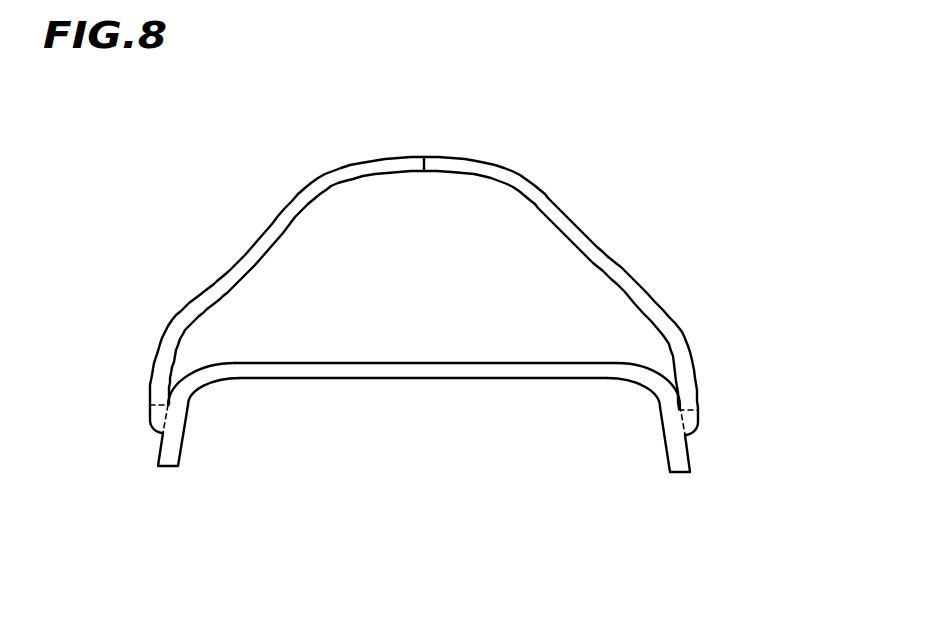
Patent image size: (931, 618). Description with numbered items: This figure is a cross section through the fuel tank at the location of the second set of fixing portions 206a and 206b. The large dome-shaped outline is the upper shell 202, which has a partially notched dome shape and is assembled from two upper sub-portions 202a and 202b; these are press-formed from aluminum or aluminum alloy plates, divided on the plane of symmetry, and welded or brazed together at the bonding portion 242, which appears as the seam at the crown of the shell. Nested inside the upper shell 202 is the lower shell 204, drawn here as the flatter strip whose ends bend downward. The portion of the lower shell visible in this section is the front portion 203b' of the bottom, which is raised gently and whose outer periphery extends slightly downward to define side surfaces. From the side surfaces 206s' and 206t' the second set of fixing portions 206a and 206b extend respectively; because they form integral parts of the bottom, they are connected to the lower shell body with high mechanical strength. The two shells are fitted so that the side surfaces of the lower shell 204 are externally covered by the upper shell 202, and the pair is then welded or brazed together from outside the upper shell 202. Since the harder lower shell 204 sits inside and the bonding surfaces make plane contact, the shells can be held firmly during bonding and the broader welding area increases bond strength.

The upper shell 202 is at (427, 234).
The upper sub-portion 202a is at (523, 178).
The upper sub-portion 202b is at (282, 212).
The bonding portion 242 is at (423, 157).
The lower shell 204 is at (424, 453).
The front portion of the bottom 203b' is at (423, 431).
The fixing portion 206a is at (678, 456).
The fixing portion 206b is at (175, 455).
The side surface 206t' is at (220, 436).
The side surface 206s' is at (636, 453).